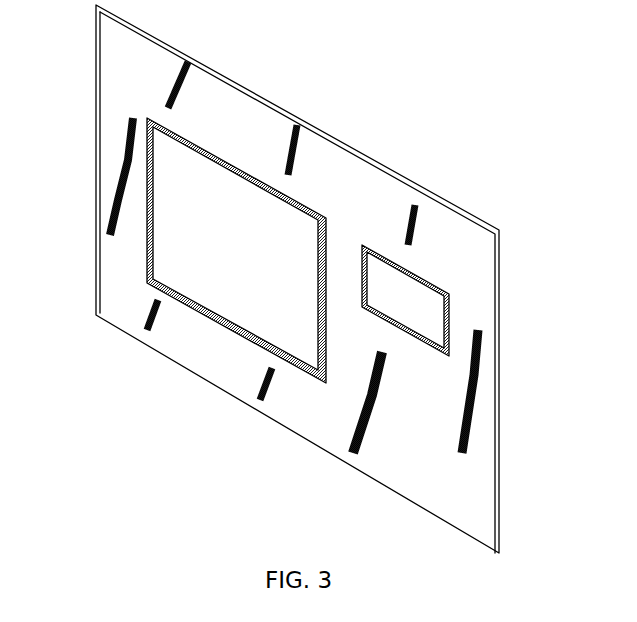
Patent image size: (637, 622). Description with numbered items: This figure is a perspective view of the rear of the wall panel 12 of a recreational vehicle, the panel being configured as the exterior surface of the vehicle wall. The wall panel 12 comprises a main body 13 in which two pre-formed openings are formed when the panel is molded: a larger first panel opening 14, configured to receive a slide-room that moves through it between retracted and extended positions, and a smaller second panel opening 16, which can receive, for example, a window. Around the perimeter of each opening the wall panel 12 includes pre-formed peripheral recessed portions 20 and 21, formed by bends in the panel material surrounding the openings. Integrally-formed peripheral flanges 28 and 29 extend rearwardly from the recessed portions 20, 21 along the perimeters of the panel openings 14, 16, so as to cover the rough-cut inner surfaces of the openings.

The wall panel 12 is at (297, 279).
The main body 13 is at (357, 167).
The first pre-formed panel opening 14 is at (236, 199).
The second pre-formed panel opening 16 is at (414, 227).
The recessed portion 20 is at (174, 199).
The recessed portion 21 is at (474, 227).
The peripheral flange 28 is at (252, 182).
The peripheral flange 29 is at (418, 280).